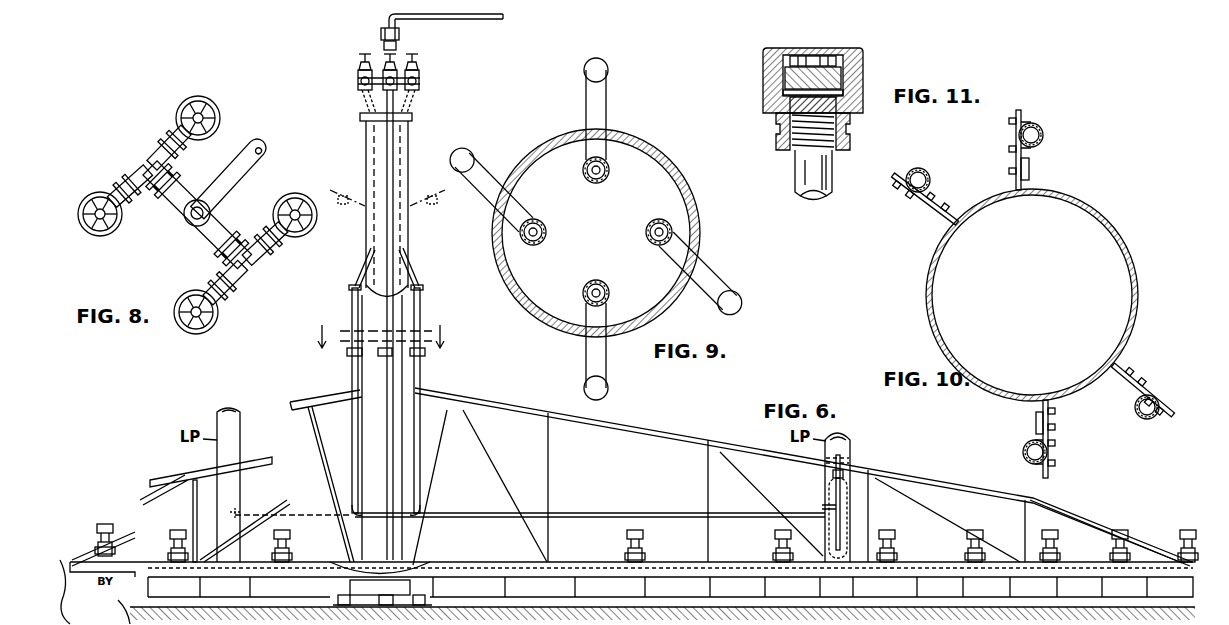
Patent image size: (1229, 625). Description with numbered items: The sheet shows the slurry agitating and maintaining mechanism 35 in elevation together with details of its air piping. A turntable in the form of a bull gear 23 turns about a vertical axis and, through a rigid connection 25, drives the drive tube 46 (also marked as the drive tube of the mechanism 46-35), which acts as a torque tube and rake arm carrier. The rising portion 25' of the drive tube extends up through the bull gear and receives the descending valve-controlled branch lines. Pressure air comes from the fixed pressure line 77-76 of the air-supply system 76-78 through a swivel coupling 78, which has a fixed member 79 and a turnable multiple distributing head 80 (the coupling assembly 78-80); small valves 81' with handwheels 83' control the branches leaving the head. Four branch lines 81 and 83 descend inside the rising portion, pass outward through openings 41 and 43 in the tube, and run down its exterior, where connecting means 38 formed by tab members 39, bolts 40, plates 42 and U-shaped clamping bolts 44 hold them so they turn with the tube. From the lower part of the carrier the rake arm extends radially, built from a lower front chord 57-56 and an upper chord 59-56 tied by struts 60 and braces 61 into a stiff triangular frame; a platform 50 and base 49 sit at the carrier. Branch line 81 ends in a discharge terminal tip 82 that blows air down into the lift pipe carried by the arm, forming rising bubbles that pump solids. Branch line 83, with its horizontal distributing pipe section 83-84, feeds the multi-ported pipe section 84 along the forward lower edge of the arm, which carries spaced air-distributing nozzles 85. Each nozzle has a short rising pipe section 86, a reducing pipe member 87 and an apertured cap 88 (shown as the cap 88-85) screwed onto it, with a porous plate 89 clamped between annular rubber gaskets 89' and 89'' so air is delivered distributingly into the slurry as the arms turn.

In FIG. 6, the turntable 23 is at (436, 207).
In FIG. 6, the rigid connection 25 is at (383, 397).
In FIG. 6, the rising portion 25' is at (405, 205).
In FIG. 8, the slurry agitating and maintaining mechanism 35 is at (249, 351).
In FIG. 10, the connecting means 38 is at (1049, 287).
In FIG. 10, the tab members 39 is at (1112, 375).
In FIG. 10, the bolts 40 is at (1127, 392).
In FIG. 9, the openings 41 is at (520, 204).
In FIG. 10, the plates 42 is at (1176, 412).
In FIG. 9, the openings 43 is at (610, 136).
In FIG. 10, the U-shaped clamping bolts 44 is at (1158, 418).
In FIG. 6, the drive tube 46 is at (452, 138).
In FIG. 6, the drive tube of slurry agitating mechanism 46-35 is at (403, 365).
In FIG. 6, the base 49 is at (344, 562).
In FIG. 6, the platform 50 is at (440, 390).
In FIG. 6, the lower front chord of rake arm 57-56 is at (625, 578).
In FIG. 6, the upper chord of rake arm 59-56 is at (652, 436).
In FIG. 6, the strut 60 is at (550, 497).
In FIG. 6, the brace 61 is at (440, 480).
In FIG. 6, the pressure air-supply system with swivel coupling 76-78 is at (332, 47).
In FIG. 8, the fixed pressure line of air-supply system 77-76 is at (255, 157).
In FIG. 8, the swivel coupling 78 is at (240, 207).
In FIG. 8, the swivel coupling with distributing head 78-80 is at (143, 170).
In FIG. 8, the fixed member 79 is at (232, 216).
In FIG. 6, the fixed member 79 is at (380, 33).
In FIG. 8, the multiple distributing head 80 is at (240, 232).
In FIG. 8, the branch line 81 is at (186, 215).
In FIG. 9, the branch line 81 is at (613, 228).
In FIG. 10, the branch line 81 is at (1033, 310).
In FIG. 6, the branch line 81 is at (379, 380).
In FIG. 8, the valve 81' is at (205, 227).
In FIG. 6, the valve 81' is at (391, 83).
In FIG. 6, the discharge terminal tip 82 is at (835, 542).
In FIG. 8, the branch line 83 is at (200, 219).
In FIG. 9, the branch line 83 is at (617, 229).
In FIG. 10, the branch line 83 is at (1030, 294).
In FIG. 8, the handwheel 83' is at (217, 226).
In FIG. 6, the handwheel 83' is at (420, 48).
In FIG. 6, the branch line and distributing pipe section 83-84 is at (522, 560).
In FIG. 6, the multi-ported distributing pipe section 84 is at (920, 560).
In FIG. 11, the air-distributing nozzle 85 is at (712, 80).
In FIG. 6, the air-distributing nozzle 85 is at (177, 532).
In FIG. 11, the rising pipe section 86 is at (800, 172).
In FIG. 11, the reducing pipe member 87 is at (850, 128).
In FIG. 6, the apertured cap 88 is at (383, 46).
In FIG. 11, the apertured cap of air nozzle 88-85 is at (866, 60).
In FIG. 11, the porous plate 89 is at (780, 78).
In FIG. 11, the annular rubber gasket 89' is at (792, 42).
In FIG. 11, the annular rubber gasket 89'' is at (783, 105).